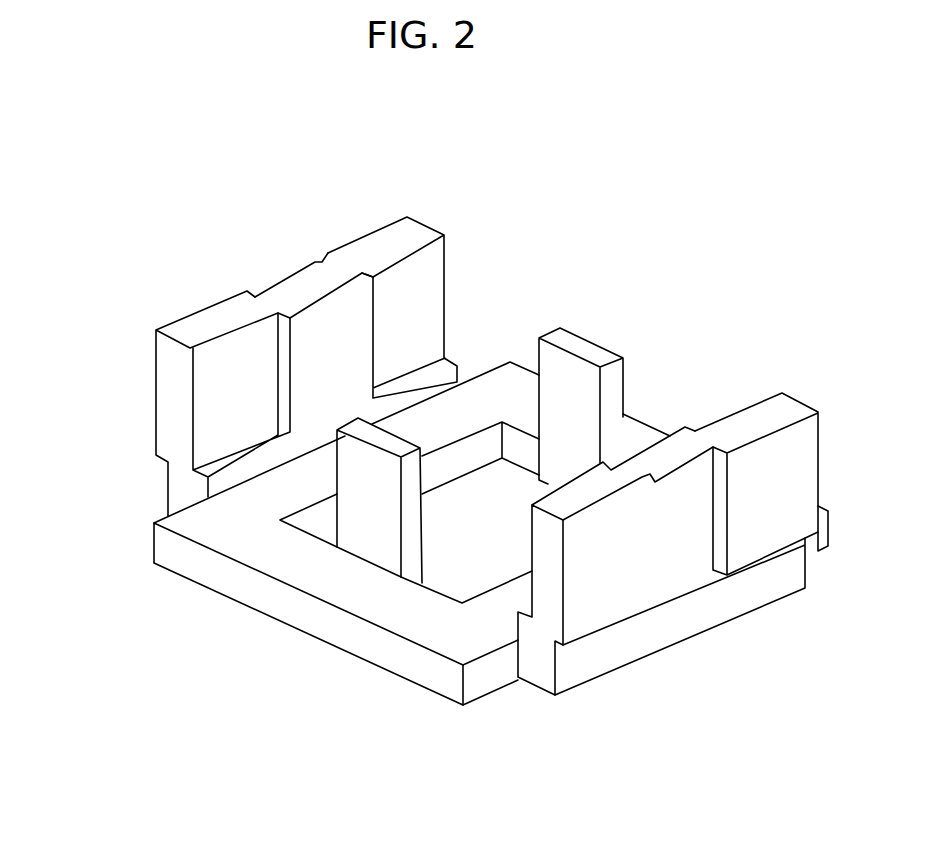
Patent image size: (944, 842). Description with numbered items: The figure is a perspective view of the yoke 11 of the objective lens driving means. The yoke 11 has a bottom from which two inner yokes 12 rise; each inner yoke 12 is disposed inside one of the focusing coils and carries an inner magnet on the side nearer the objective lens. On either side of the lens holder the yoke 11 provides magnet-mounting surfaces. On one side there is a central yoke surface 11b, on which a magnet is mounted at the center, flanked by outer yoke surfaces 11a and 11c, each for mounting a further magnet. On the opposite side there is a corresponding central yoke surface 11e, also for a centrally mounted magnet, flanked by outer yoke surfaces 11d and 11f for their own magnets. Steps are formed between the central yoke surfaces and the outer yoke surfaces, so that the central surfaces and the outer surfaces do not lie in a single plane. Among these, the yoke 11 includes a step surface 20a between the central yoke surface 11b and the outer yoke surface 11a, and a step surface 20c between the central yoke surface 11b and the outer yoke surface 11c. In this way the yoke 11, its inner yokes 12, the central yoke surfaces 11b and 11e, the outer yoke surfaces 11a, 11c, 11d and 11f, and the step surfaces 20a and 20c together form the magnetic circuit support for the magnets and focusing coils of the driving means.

The yoke 11 is at (280, 563).
The outer yoke surface 11a is at (400, 287).
The central yoke surface 11b is at (325, 340).
The outer yoke surface 11c is at (235, 363).
The outer yoke surface 11d is at (737, 403).
The central yoke surface 11e is at (640, 440).
The outer yoke surface 11f is at (552, 490).
The inner yoke 12 is at (587, 350).
The step surface 20a is at (375, 333).
The step surface 20c is at (285, 357).